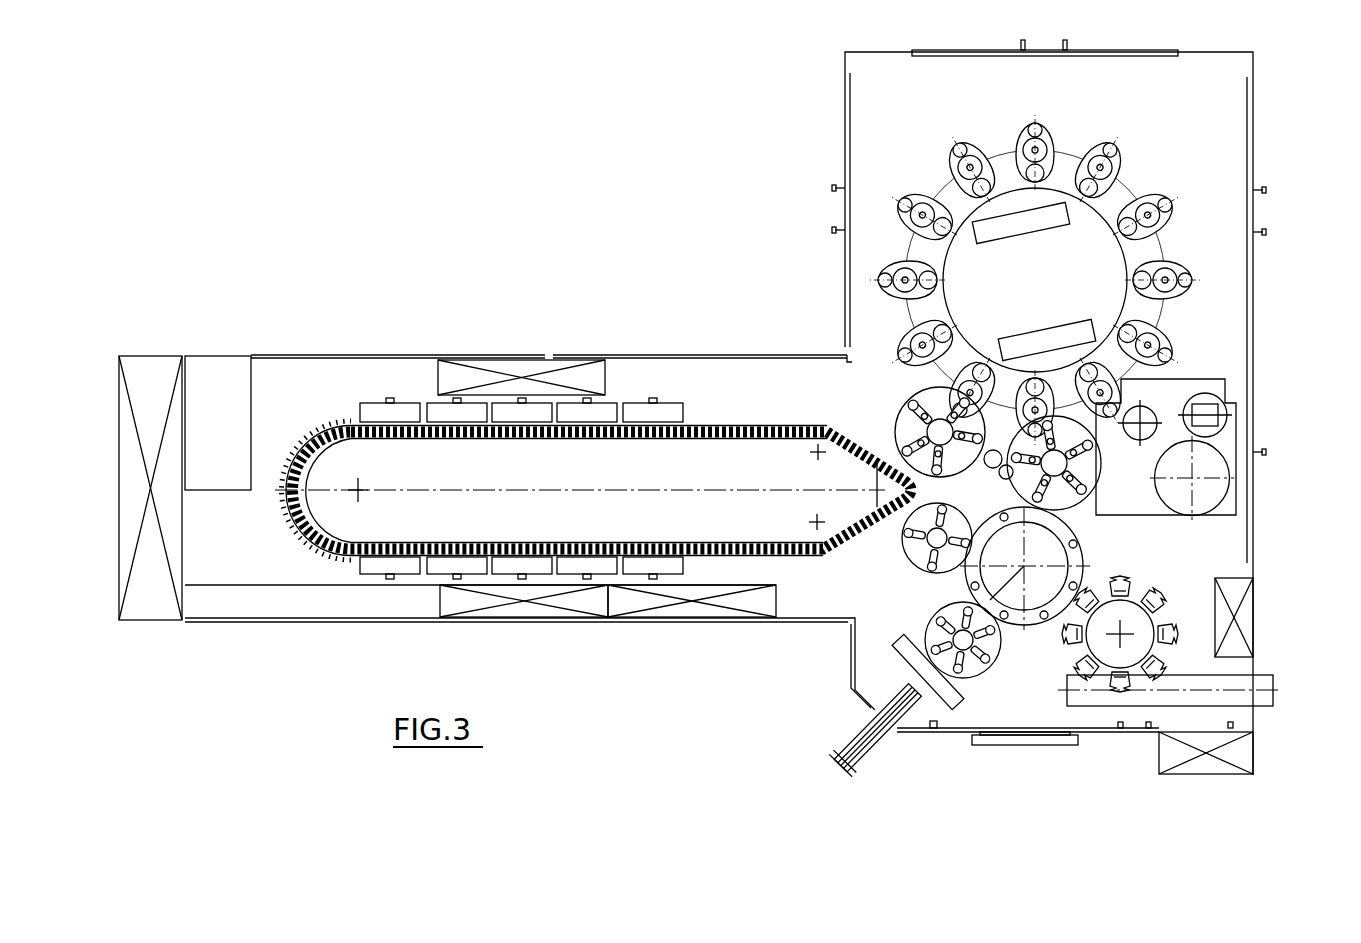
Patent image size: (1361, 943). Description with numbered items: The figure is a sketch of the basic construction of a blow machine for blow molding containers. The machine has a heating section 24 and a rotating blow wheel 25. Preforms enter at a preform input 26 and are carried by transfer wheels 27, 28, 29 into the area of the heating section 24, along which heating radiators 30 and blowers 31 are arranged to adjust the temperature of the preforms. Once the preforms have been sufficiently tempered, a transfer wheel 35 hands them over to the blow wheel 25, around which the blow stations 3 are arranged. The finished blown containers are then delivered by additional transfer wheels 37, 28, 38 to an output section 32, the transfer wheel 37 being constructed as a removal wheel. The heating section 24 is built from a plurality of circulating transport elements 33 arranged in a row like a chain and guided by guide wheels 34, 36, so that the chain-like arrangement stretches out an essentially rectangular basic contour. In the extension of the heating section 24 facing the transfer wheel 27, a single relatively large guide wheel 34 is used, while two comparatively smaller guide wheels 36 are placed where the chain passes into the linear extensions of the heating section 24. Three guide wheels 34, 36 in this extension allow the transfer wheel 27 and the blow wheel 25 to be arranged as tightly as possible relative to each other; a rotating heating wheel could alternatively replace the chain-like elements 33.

The blow stations 3 is at (893, 262).
The heating section 24 is at (642, 385).
The blow wheel 25 is at (973, 203).
The preform input 26 is at (883, 733).
The transfer wheel 27 is at (975, 675).
The transfer wheel 28 is at (1027, 625).
The transfer wheel 29 is at (918, 566).
The heating radiators 30 is at (405, 407).
The blowers 31 is at (517, 367).
The output section 32 is at (1265, 691).
The circulating transport elements 33 is at (333, 548).
The guide wheel 34 is at (358, 493).
The transfer wheel 35 is at (928, 400).
The guide wheels 36 is at (815, 452).
The transfer wheel 37 is at (1101, 478).
The transfer wheel 38 is at (1128, 640).